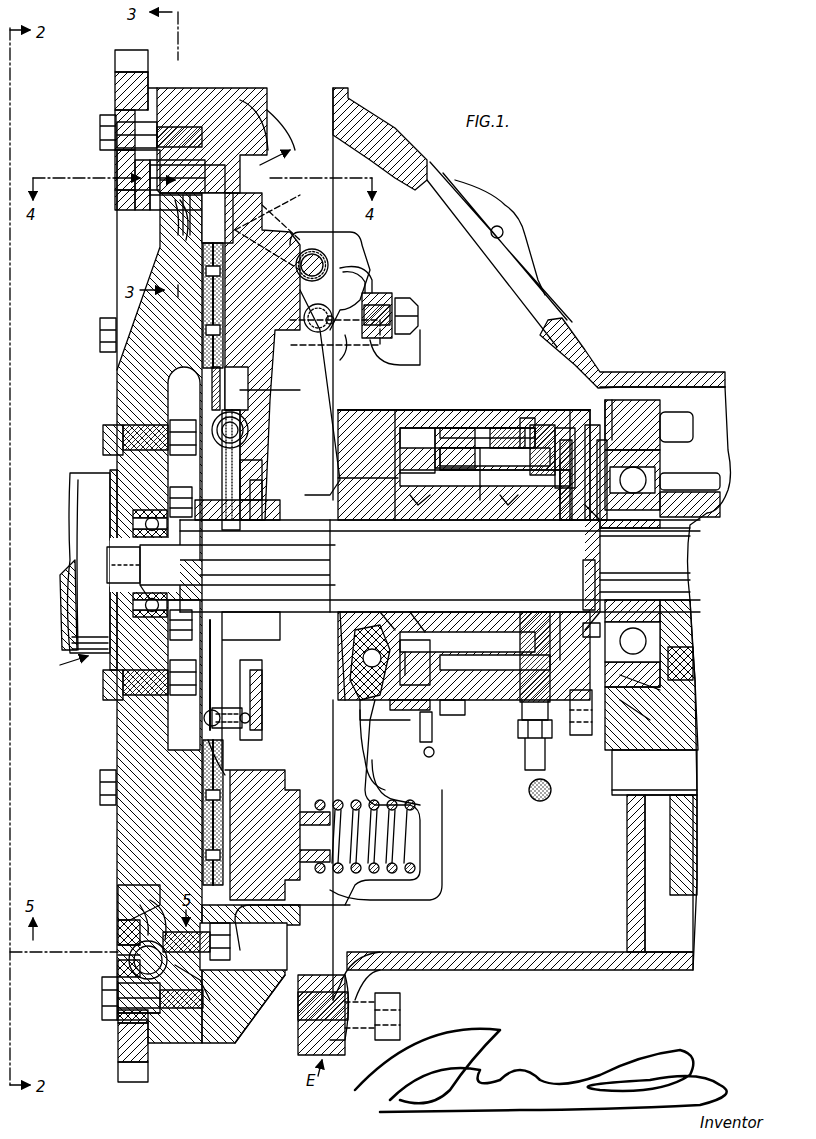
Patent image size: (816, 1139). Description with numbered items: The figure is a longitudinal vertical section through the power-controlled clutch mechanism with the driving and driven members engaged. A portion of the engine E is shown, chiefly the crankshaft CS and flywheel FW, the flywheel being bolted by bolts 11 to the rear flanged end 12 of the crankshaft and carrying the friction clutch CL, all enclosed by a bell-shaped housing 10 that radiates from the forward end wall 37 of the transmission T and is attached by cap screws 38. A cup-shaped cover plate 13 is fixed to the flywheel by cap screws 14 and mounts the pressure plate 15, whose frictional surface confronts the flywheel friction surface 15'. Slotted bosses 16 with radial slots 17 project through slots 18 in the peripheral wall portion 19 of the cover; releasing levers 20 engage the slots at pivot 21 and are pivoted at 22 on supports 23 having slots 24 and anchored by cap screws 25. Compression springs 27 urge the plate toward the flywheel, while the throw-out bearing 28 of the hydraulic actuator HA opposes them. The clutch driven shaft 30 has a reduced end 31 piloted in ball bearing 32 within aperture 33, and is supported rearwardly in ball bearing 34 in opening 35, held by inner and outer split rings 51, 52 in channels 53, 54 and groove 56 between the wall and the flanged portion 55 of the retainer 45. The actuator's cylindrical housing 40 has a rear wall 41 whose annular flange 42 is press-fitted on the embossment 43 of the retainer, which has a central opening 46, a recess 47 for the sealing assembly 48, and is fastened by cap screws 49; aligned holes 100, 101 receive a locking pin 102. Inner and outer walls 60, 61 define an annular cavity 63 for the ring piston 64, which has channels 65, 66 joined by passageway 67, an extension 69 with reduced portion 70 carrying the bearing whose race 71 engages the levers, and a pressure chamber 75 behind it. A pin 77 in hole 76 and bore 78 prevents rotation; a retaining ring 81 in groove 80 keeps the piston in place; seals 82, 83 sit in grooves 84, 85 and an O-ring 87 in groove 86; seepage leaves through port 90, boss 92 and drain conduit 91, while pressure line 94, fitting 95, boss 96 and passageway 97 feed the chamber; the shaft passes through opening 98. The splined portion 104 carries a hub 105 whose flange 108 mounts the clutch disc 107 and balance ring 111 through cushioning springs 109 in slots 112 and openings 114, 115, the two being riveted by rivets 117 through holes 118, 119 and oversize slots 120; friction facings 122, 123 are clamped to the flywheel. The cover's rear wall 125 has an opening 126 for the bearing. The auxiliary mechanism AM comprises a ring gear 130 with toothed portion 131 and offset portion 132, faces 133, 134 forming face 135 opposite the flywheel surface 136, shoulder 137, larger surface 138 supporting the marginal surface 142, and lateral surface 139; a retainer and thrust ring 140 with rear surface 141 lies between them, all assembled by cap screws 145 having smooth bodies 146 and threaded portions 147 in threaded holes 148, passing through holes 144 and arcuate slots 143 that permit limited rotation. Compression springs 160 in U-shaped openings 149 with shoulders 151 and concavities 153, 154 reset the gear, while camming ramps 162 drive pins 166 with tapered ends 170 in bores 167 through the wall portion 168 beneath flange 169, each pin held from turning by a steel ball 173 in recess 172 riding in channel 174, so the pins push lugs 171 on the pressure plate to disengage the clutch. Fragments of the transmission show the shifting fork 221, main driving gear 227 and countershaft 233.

The housing 10 is at (575, 350).
The bolts 11 is at (105, 435).
The rear flanged end 12 is at (118, 700).
The cover plate 13 is at (365, 370).
The cap screws 14 is at (230, 950).
The clutch pressure plate 15 is at (262, 548).
The frictional surface 15' is at (179, 539).
The bosses 16 is at (275, 250).
The radial slots 17 is at (293, 222).
The slots 18 is at (355, 272).
The peripheral marginal wall portion 19 is at (330, 248).
The clutch releasing levers 20 is at (319, 374).
The pivot 21 is at (325, 262).
The pivotal connection 22 is at (305, 330).
The supports 23 is at (392, 296).
The slot 24 is at (351, 347).
The cap screws 25 is at (418, 316).
The clutch engaging compression springs 27 is at (340, 800).
The clutch throw-out bearing 28 is at (355, 660).
The clutch driven shaft 30 is at (490, 575).
The forward reduced end 31 is at (108, 560).
The ball bearing 32 is at (133, 520).
The circular aperture 33 is at (145, 520).
The ball bearing 34 is at (662, 615).
The circular opening 35 is at (680, 660).
The forward end wall 37 is at (628, 905).
The cap screws 38 is at (400, 1010).
The cylindrical housing 40 is at (452, 410).
The rear wall 41 is at (575, 410).
The annular flange 42 is at (590, 425).
The circular embossment 43 is at (602, 440).
The bearing and oil-seal retainer 45 is at (612, 400).
The central circular opening 46 is at (565, 510).
The circular recessed portion 47 is at (575, 490).
The shaft sealing assembly 48 is at (565, 600).
The cap screws 49 is at (578, 736).
The inner split retaining ring 51 is at (588, 582).
The outer split retaining ring 52 is at (652, 430).
The annular channel 53 is at (592, 520).
The annular channel 54 is at (662, 448).
The peripheral flanged portion 55 is at (650, 385).
The annular groove 56 is at (648, 462).
The inner circular wall 60 is at (340, 622).
The outer circular wall 61 is at (405, 710).
The annular cavity 63 is at (415, 664).
The ring-type piston 64 is at (440, 428).
The inner annular surface channel 65 is at (460, 486).
The outer annular surface channel 66 is at (470, 428).
The radial passageway 67 is at (450, 715).
The extension 69 is at (440, 455).
The reduced diameter terminating portion 70 is at (345, 630).
The forward rotatable race 71 is at (370, 690).
The annular hydraulic pressure chamber 75 is at (540, 425).
The longitudinal hole 76 is at (438, 500).
The pin 77 is at (555, 500).
The bore 78 is at (560, 430).
The internal annular groove 80 is at (412, 412).
The split-type retaining ring 81 is at (400, 430).
The inner flexible seal 82 is at (512, 505).
The outer flexible seal 83 is at (525, 418).
The circular groove 84 is at (488, 500).
The circular groove 85 is at (505, 428).
The annular groove 86 is at (400, 612).
The O-ring pliant seal 87 is at (425, 612).
The port 90 is at (410, 720).
The drain conduit 91 is at (429, 758).
The exterior boss 92 is at (432, 735).
The pressure line 94 is at (548, 796).
The fitting 95 is at (532, 770).
The boss 96 is at (535, 745).
The passageway 97 is at (520, 690).
The circular opening 98 is at (390, 505).
The hole 100 is at (660, 690).
The hole 101 is at (602, 629).
The locking pin 102 is at (650, 720).
The splined portion 104 is at (222, 566).
The hub 105 is at (280, 508).
The clutch disc 107 is at (212, 395).
The flange 108 is at (262, 490).
The cushioning springs 109 is at (248, 428).
The balance ring 111 is at (262, 470).
The radial slots 112 is at (248, 420).
The openings 114 is at (228, 412).
The openings 115 is at (260, 410).
The rivets 117 is at (242, 716).
The holes 118 is at (210, 718).
The holes 119 is at (250, 722).
The oversize slots 120 is at (304, 694).
The friction facing 122 is at (212, 760).
The friction facing 123 is at (240, 760).
The rear wall portion 125 is at (368, 760).
The central circular opening 126 is at (362, 725).
The ring gear 130 is at (115, 80).
The outer toothed portion 131 is at (128, 58).
The inner offset portion 132 is at (152, 95).
The forward face 133 is at (118, 1030).
The forward portion face 134 is at (115, 112).
The internal circular face portion 135 is at (115, 120).
The annular surface 136 is at (118, 925).
The annular shoulder 137 is at (130, 890).
The larger annular surface 138 is at (145, 920).
The lateral surface 139 is at (160, 90).
The retainer and thrust ring 140 is at (112, 192).
The rear surface portion 141 is at (118, 966).
The inner marginal surface 142 is at (150, 195).
The arcuate slots 143 is at (170, 125).
The circular holes 144 is at (117, 160).
The cap screws 145 is at (100, 130).
The smooth body portion 146 is at (138, 567).
The reduced diameter threaded portion 147 is at (225, 1072).
The threaded holes 148 is at (225, 100).
The rectangular openings 149 is at (118, 1008).
The shoulder 151 is at (185, 972).
The arcuate concavity 153 is at (160, 905).
The arcuate concavity 154 is at (120, 950).
The compression spring 160 is at (120, 935).
The camming ramps 162 is at (115, 172).
The actuating pins 166 is at (187, 180).
The bores 167 is at (185, 210).
The vertical wall portion 168 is at (180, 290).
The flanged portion 169 is at (175, 210).
The tapered ends 170 is at (112, 180).
The radially projecting lugs 171 is at (276, 206).
The surface recess 172 is at (184, 200).
The steel ball 173 is at (192, 200).
The longitudinal surface channel 174 is at (276, 122).
The shifting fork 221 is at (675, 550).
The main driving gear 227 is at (712, 516).
The countershaft 233 is at (660, 775).
The auxiliary clutch disengaging mechanism AM is at (289, 145).
The friction clutch CL is at (330, 918).
The crankshaft CS is at (72, 630).
The engine E is at (70, 669).
The flywheel FW is at (116, 405).
The hydraulic clutch actuator HA is at (485, 410).
The change-speed transmission T is at (720, 410).